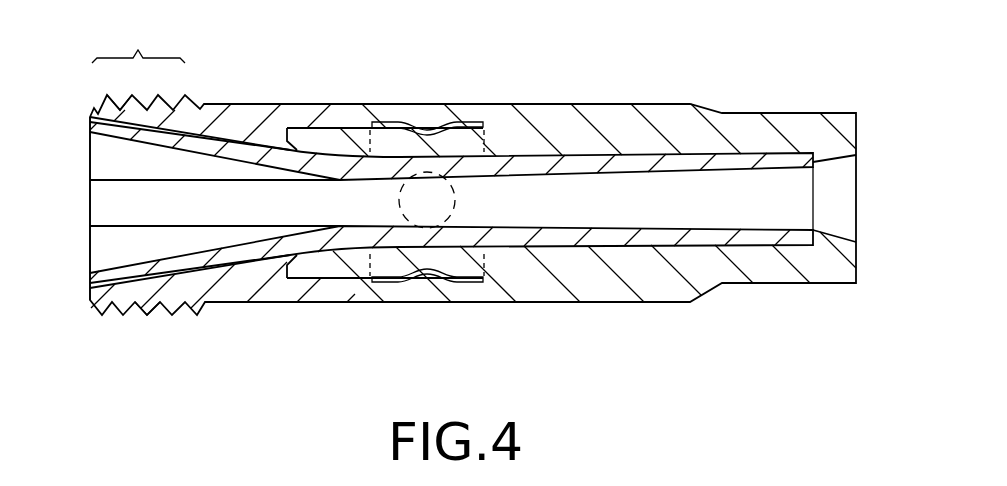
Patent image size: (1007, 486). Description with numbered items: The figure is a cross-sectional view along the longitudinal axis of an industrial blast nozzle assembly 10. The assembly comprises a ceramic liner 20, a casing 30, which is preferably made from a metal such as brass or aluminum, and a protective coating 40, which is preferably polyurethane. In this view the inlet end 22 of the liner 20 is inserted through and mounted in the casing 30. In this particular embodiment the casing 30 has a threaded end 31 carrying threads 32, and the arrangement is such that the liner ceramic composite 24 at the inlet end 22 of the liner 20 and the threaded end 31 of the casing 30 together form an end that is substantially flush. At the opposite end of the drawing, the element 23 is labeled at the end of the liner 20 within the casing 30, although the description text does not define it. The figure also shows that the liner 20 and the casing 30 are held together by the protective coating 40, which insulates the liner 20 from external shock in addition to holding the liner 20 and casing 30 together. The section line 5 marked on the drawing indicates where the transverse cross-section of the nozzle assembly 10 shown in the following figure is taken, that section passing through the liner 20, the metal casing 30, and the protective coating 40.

The industrial blast nozzle assembly 10 is at (703, 60).
The ceramic liner 20 is at (653, 258).
The inlet end 22 is at (105, 168).
The outlet bore 23 is at (813, 183).
The liner ceramic composite 24 is at (102, 280).
The casing 30 is at (250, 105).
The threaded end 31 is at (140, 50).
The threads 32 is at (177, 80).
The protective coating 40 is at (550, 278).
The section line 5— 5 is at (355, 97).